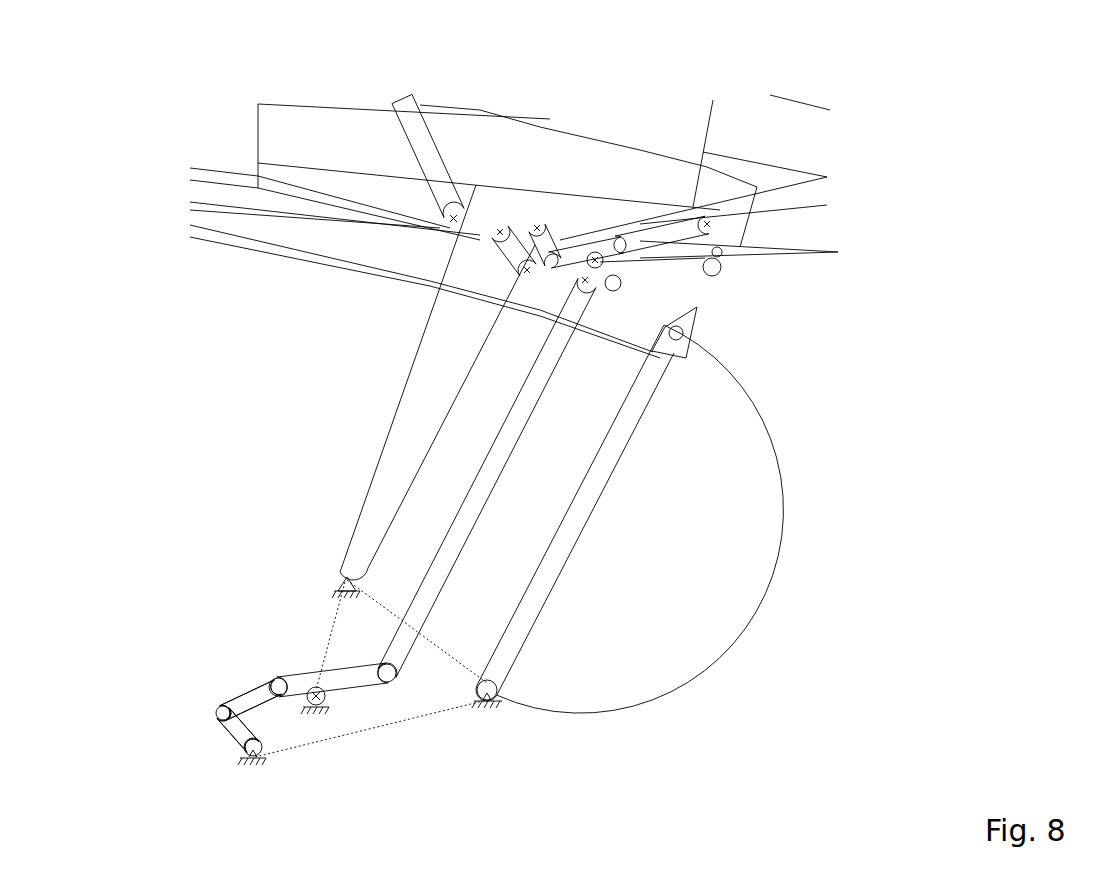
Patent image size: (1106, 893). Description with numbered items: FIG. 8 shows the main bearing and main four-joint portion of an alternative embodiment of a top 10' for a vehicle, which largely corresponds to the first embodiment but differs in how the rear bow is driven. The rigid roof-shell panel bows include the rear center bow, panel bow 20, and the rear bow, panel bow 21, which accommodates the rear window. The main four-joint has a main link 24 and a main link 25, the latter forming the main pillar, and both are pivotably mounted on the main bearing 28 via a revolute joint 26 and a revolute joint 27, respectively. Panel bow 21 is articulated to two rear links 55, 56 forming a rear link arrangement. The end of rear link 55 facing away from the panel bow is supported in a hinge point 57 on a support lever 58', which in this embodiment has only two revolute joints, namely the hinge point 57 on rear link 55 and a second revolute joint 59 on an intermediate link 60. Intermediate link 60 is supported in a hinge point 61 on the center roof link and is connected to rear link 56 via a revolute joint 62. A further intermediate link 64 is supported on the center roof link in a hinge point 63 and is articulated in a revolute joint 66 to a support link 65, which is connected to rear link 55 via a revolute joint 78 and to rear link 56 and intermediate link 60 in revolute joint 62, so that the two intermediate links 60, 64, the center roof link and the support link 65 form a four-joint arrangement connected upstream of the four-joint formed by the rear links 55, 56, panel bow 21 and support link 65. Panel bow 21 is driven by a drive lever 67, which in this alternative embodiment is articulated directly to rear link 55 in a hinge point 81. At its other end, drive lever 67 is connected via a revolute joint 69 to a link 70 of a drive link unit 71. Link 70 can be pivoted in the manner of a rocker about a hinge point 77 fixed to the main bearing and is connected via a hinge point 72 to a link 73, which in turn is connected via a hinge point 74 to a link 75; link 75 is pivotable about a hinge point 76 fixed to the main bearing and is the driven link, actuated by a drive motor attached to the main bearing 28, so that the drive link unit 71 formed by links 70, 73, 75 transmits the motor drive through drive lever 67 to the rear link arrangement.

The panel bow 20 is at (325, 118).
The panel bow 21 is at (782, 115).
The rear link 55 is at (812, 195).
The rear link 56 is at (812, 245).
The support link 65 is at (716, 250).
The revolute joint 62 is at (720, 268).
The intermediate link 60 is at (665, 278).
The hinge point 63 is at (499, 226).
The hinge point 61 is at (522, 272).
The intermediate link 64 is at (576, 232).
The hinge point 57 is at (553, 256).
The revolute joint 78 is at (618, 240).
The revolute joint 66 is at (707, 222).
The revolute joint 59 is at (596, 262).
The hinge point 81 is at (614, 283).
The support lever 58' is at (663, 361).
The top 10' is at (952, 339).
The main link 25 is at (415, 418).
The drive lever 67 is at (487, 478).
The main link 24 is at (540, 593).
The revolute joint 27 is at (344, 574).
The revolute joint 26 is at (494, 692).
The link 70 is at (345, 680).
The revolute joint 69 is at (389, 677).
The hinge point 72 is at (278, 684).
The hinge point 77 is at (318, 703).
The drive link unit 71 is at (212, 708).
The link 73 is at (250, 700).
The link 75 is at (235, 732).
The hinge point 74 is at (224, 715).
The hinge point 76 is at (253, 750).
The main bearing 28 is at (358, 720).